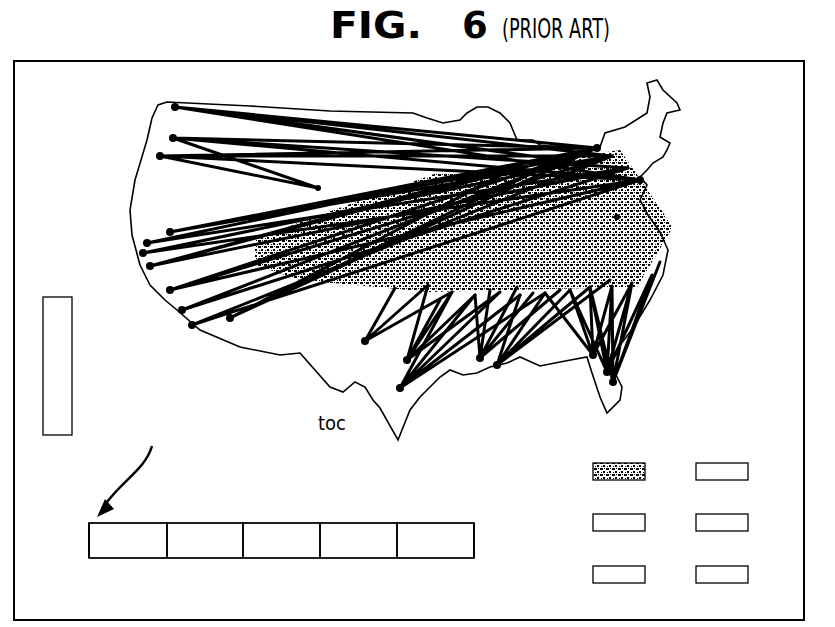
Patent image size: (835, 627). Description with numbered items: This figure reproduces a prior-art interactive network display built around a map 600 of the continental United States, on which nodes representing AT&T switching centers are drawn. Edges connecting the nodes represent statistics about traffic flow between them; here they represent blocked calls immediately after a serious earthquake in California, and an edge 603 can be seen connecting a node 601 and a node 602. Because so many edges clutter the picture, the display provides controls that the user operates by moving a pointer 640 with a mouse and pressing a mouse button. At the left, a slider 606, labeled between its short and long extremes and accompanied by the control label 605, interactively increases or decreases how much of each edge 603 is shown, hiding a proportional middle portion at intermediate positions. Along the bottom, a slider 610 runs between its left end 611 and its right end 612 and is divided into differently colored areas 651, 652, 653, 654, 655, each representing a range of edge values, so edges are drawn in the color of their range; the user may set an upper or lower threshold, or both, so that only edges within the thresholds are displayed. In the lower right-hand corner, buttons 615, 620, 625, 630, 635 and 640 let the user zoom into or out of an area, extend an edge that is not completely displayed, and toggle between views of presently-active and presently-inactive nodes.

The map 600 is at (365, 110).
The node 601 is at (167, 113).
The node 602 is at (612, 152).
The edge 603 is at (573, 146).
The link length slider control 605 is at (56, 262).
The slider 606 is at (72, 298).
The slider 610 is at (320, 523).
The time line left end 611 is at (89, 538).
The time line right end 612 is at (475, 525).
The NORMAL button 615 is at (605, 471).
The EXTEND button 620 is at (732, 472).
The RESET button 625 is at (605, 522).
The INVERT button 630 is at (732, 523).
The ZOOM button 635 is at (605, 573).
The pointer 640 is at (768, 575).
The area 651 is at (119, 540).
The second time segment 652 is at (200, 535).
The third time segment 653 is at (262, 530).
The fourth time segment 654 is at (377, 532).
The fifth time segment 655 is at (430, 545).